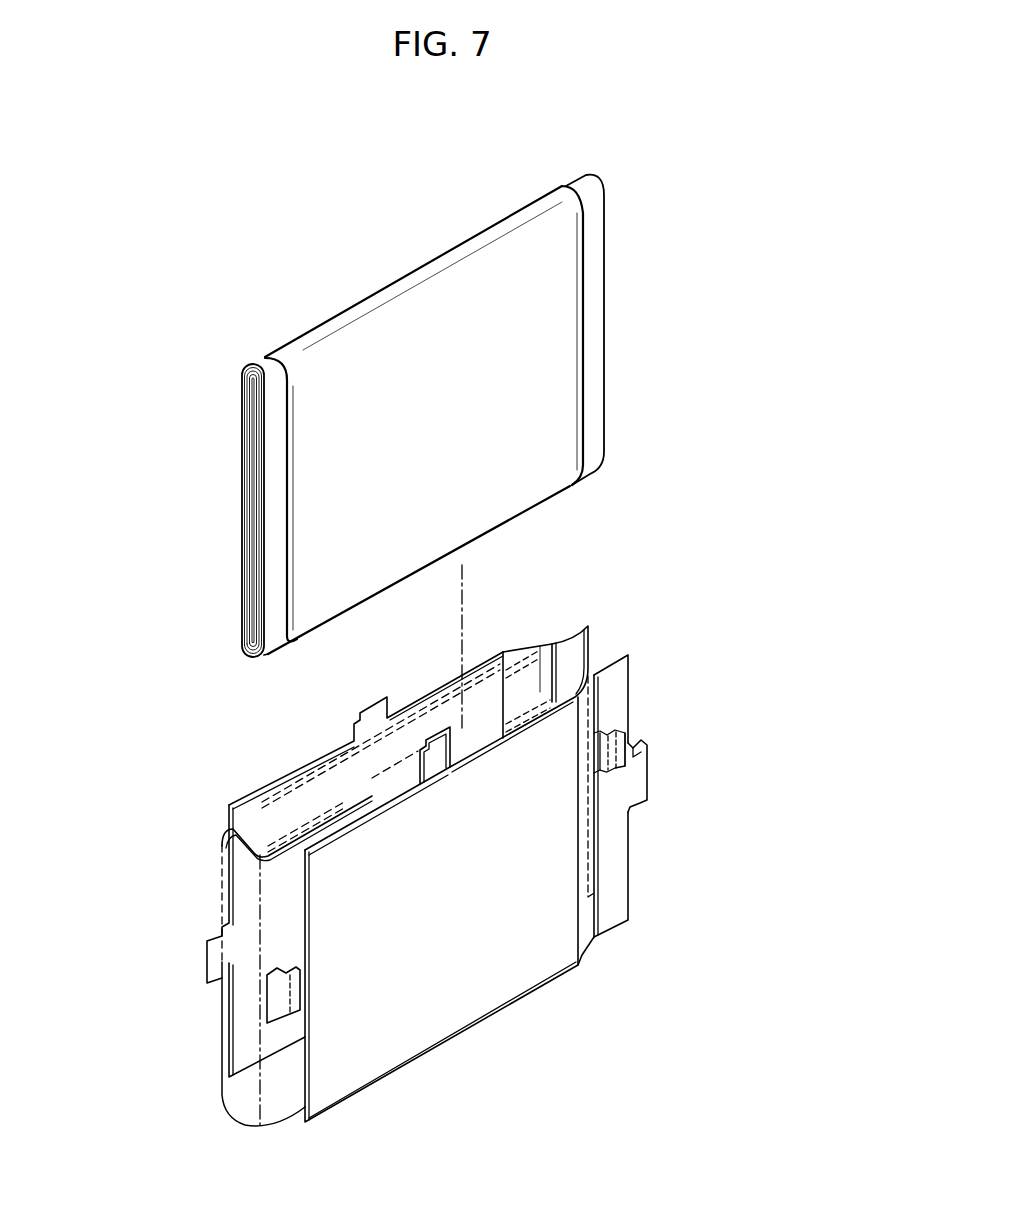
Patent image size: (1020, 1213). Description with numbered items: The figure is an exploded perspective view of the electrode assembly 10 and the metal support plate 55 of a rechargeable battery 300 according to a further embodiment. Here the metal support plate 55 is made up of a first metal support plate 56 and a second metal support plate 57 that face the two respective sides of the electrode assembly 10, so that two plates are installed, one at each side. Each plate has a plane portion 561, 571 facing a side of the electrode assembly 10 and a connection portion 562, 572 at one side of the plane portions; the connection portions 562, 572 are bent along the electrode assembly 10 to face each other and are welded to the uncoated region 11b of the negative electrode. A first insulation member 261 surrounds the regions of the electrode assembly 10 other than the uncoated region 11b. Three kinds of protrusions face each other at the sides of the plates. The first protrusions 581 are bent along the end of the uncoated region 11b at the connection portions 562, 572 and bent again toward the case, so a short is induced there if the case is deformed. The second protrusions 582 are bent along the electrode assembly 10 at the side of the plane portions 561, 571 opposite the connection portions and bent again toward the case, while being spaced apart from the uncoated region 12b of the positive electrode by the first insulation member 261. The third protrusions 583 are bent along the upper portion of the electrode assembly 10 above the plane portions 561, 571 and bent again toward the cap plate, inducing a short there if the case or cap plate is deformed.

The rechargeable battery 300 is at (367, 153).
The electrode assembly 10 is at (372, 280).
The uncoated region of the negative electrode 11b is at (598, 322).
The uncoated region of the positive electrode 12b is at (266, 364).
The metal support plate 55 is at (130, 742).
The first metal support plate 56 is at (298, 876).
The second metal support plate 57 is at (221, 800).
The first insulation member 261 is at (278, 792).
The plane portion 561 is at (464, 1010).
The connection portion 562 is at (628, 652).
The plane portion 571 is at (337, 745).
The connection portion 572 is at (574, 623).
The first protrusion 581 is at (640, 740).
The second protrusion 582 is at (270, 1014).
The third protrusion 583 is at (440, 736).